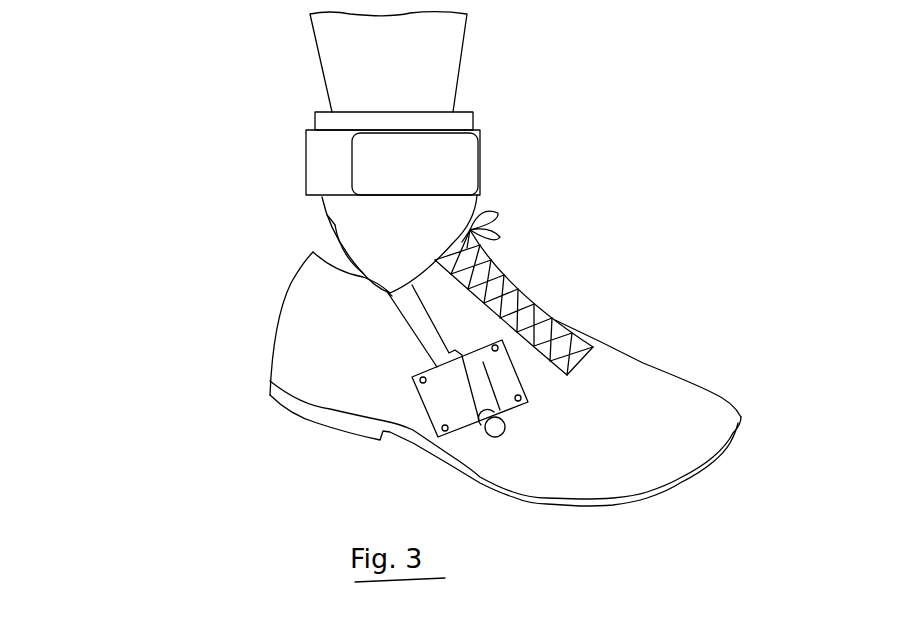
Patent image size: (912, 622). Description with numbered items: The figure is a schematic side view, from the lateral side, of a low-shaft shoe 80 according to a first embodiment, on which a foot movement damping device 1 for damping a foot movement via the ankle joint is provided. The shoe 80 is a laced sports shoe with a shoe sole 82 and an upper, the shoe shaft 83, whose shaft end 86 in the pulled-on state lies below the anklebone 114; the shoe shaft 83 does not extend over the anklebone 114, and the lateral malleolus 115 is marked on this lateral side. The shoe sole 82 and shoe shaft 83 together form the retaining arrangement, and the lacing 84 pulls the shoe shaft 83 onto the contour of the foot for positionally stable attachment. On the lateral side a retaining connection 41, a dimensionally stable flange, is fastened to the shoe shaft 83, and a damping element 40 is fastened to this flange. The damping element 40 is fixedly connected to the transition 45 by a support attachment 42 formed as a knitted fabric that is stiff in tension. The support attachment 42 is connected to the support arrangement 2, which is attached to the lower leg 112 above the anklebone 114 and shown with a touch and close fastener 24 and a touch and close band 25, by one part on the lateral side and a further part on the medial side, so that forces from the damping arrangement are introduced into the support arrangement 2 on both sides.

The foot movement damping device 1 is at (96, 229).
The support arrangement 2 is at (283, 113).
The touch and close fastener 24 is at (379, 124).
The touch and close band 25 is at (470, 153).
The damping element 40 is at (426, 390).
The retaining connection 41 is at (438, 408).
The support attachment 42 is at (450, 216).
The transition 45 is at (390, 293).
The shoe 80 is at (772, 151).
The shoe sole 82 is at (603, 500).
The shoe shaft 83 is at (707, 398).
The lacing 84 is at (590, 335).
The shaft end 86 is at (316, 262).
The lower leg 112 is at (445, 47).
The anklebone 114 is at (248, 188).
The lateral malleolus 115 is at (342, 246).